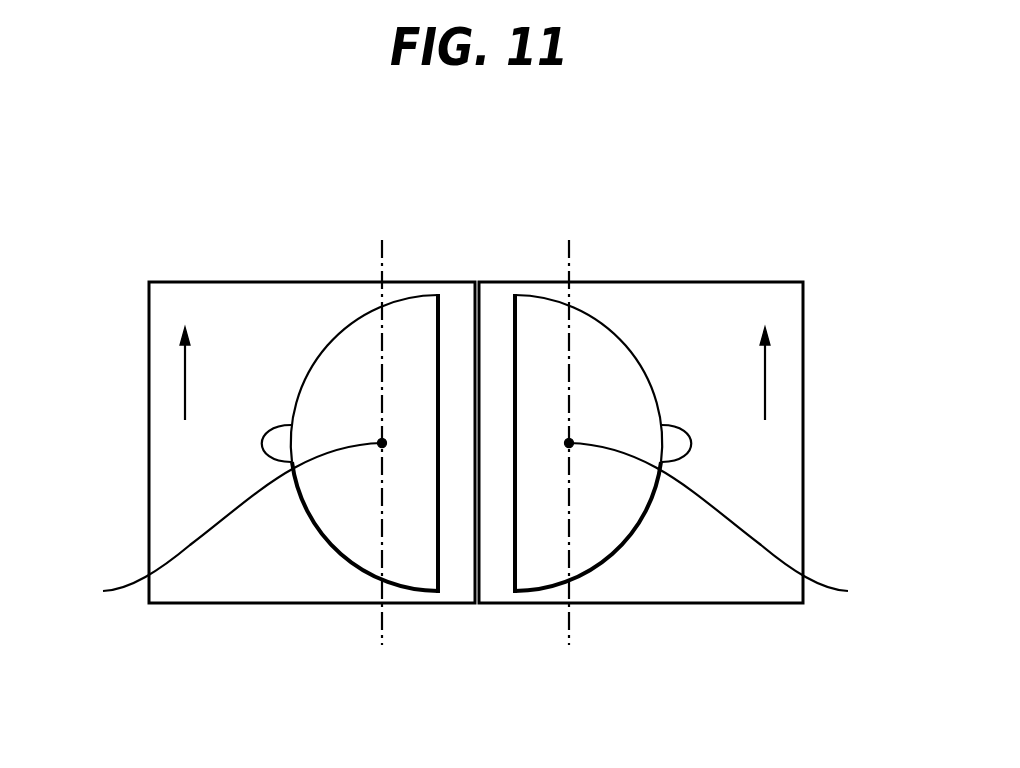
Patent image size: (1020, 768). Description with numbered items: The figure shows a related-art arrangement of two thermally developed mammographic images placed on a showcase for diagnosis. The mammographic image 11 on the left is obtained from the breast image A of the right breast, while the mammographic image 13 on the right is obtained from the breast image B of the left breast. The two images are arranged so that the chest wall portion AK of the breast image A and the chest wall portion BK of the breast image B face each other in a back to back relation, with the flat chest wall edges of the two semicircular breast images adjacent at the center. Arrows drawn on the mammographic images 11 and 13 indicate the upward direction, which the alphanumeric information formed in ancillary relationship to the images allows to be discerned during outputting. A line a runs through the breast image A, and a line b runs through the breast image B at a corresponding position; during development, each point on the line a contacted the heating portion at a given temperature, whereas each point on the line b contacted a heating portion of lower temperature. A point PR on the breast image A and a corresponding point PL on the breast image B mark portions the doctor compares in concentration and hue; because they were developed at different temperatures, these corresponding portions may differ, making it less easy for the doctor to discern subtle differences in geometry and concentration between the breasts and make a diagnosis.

The mammographic image 11 is at (160, 450).
The mammographic image 13 is at (790, 443).
The breast image A is at (342, 345).
The breast image B is at (608, 345).
The chest wall portion AK is at (442, 330).
The chest wall portion BK is at (515, 332).
The point PR is at (220, 526).
The point PL is at (727, 525).
The line a is at (378, 628).
The line b is at (573, 628).